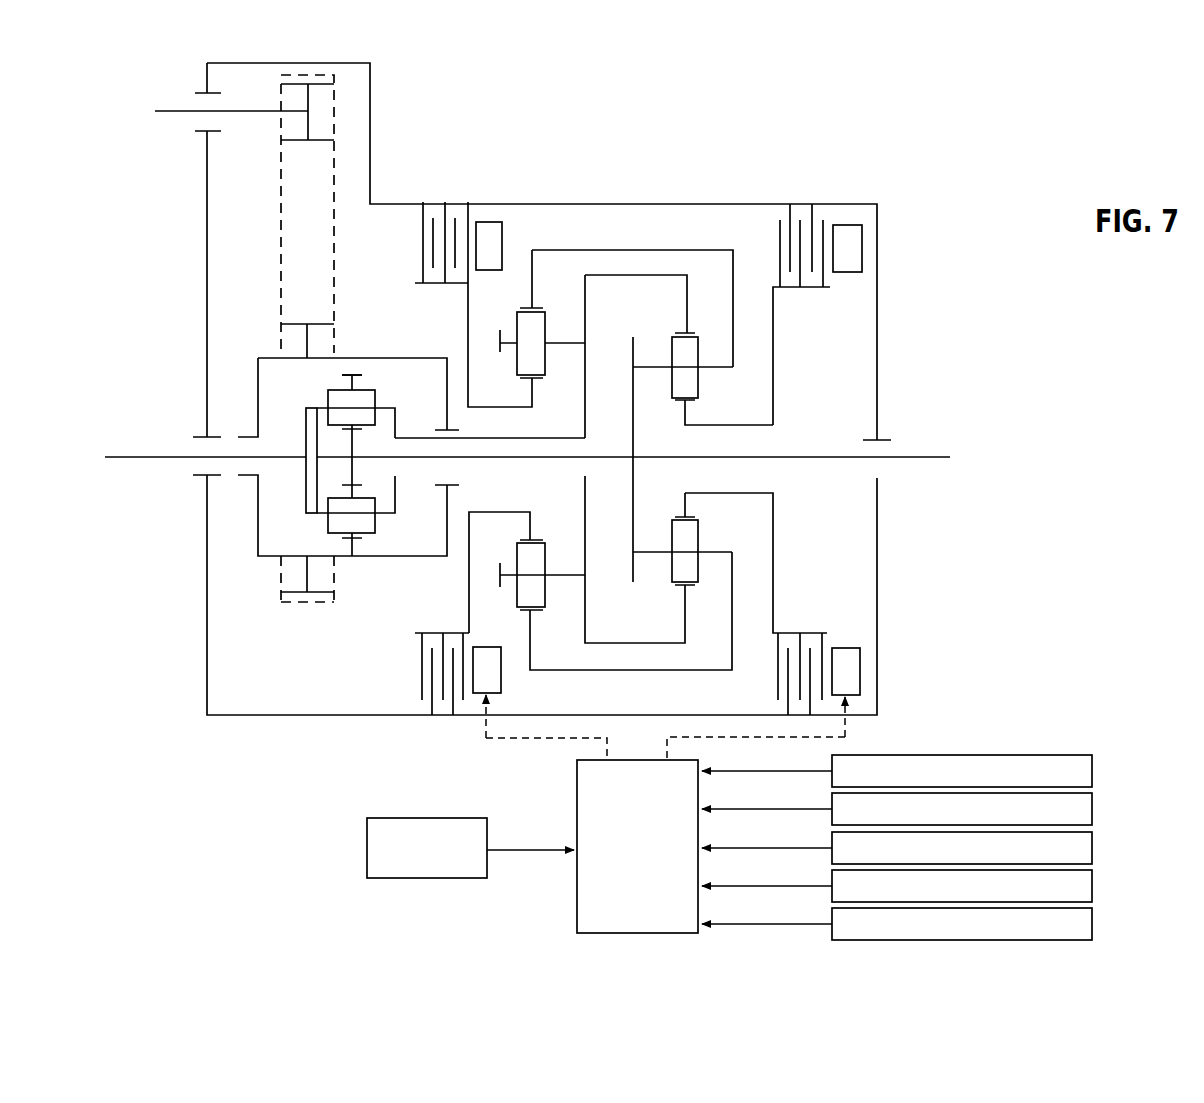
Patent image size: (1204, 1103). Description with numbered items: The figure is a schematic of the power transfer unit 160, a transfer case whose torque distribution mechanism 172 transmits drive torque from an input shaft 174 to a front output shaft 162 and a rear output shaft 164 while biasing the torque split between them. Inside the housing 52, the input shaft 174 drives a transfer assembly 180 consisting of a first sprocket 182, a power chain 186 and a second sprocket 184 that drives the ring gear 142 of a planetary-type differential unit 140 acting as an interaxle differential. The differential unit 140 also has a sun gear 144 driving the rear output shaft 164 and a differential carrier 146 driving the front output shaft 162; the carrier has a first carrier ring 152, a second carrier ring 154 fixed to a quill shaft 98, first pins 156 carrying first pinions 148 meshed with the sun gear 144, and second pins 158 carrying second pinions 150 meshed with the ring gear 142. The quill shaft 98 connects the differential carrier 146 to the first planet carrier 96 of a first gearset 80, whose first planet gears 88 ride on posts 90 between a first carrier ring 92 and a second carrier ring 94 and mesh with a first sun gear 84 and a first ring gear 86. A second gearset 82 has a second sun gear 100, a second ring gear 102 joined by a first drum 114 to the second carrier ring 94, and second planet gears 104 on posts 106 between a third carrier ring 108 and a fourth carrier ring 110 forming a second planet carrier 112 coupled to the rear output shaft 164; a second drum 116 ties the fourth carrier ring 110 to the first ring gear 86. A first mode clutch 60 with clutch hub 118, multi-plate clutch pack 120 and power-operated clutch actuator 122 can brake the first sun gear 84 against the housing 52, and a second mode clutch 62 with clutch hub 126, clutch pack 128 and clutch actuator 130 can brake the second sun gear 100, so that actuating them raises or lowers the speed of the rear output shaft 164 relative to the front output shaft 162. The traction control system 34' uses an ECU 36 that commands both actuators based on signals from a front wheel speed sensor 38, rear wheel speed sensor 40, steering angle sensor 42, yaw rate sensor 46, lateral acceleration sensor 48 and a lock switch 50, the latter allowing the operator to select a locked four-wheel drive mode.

The traction control system 34' is at (491, 911).
The electronic control unit (ECU) 36 is at (590, 787).
The front wheel speed sensor 38 is at (1093, 762).
The rear wheel speed sensor 40 is at (1093, 800).
The steering angle sensor 42 is at (1093, 840).
The yaw rate sensor 46 is at (1093, 878).
The lateral acceleration sensor 48 is at (1093, 920).
The lock switch 50 is at (378, 841).
The housing 52 is at (878, 316).
The first mode clutch 60 is at (488, 198).
The second mode clutch 62 is at (869, 205).
The first gearset 80 is at (553, 523).
The second gearset 82 is at (664, 580).
The first sun gear 84 is at (534, 392).
The first ring gear 86 is at (534, 280).
The first planet gears 88 is at (518, 325).
The post 90 is at (561, 343).
The first carrier ring 92 is at (500, 352).
The second carrier ring 94 is at (586, 360).
The first planet carrier 96 is at (583, 586).
The quill shaft 98 is at (497, 438).
The second sun gear 100 is at (680, 403).
The second ring gear 102 is at (688, 606).
The second planet gears 104 is at (697, 533).
The post 106 is at (648, 548).
The third carrier ring 108 is at (630, 412).
The fourth carrier ring 110 is at (735, 600).
The second planet carrier 112 is at (628, 556).
The first drum 114 is at (657, 276).
The second drum 116 is at (632, 650).
The clutch hub 118 is at (469, 588).
The multi-plate clutch pack 120 is at (428, 220).
The power-operated clutch actuator 122 is at (505, 228).
The clutch hub 126 is at (774, 340).
The clutch pack 128 is at (790, 238).
The power-operated clutch actuator 130 is at (863, 243).
The differential unit 140 is at (399, 478).
The ring gear 142 is at (352, 371).
The sun gear 144 is at (356, 463).
The differential carrier 146 is at (300, 492).
The first pinions 148 is at (373, 392).
The second pinions 150 is at (371, 524).
The first carrier ring 152 is at (306, 438).
The second carrier ring 154 is at (420, 425).
The first pins 156 is at (317, 408).
The second pins 158 is at (316, 514).
The power transfer unit 160 is at (737, 117).
The front output shaft 162 is at (160, 455).
The rear output shaft 164 is at (913, 458).
The torque distribution mechanism 172 is at (647, 232).
The input shaft 174 is at (254, 113).
The transfer assembly 180 is at (338, 172).
The first sprocket 182 is at (320, 93).
The second sprocket 184 is at (312, 604).
The power chain 186 is at (284, 257).